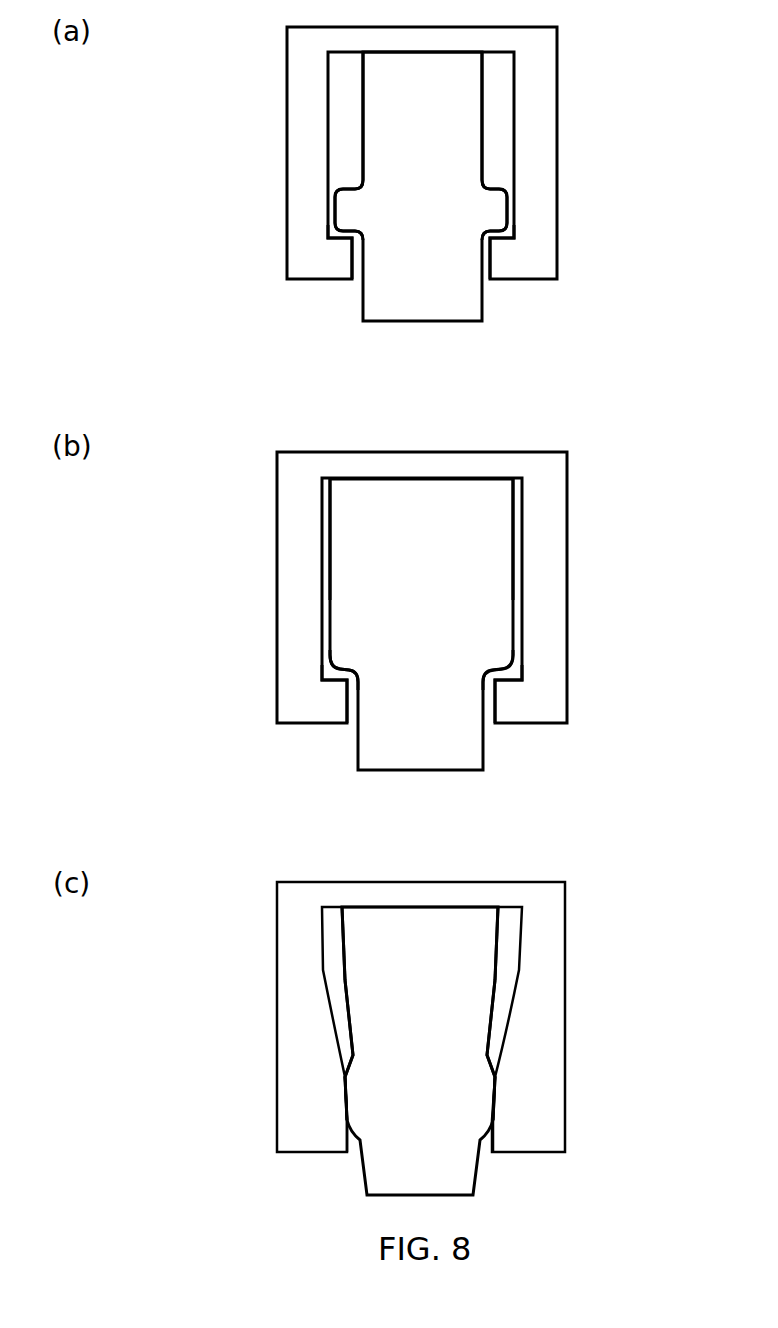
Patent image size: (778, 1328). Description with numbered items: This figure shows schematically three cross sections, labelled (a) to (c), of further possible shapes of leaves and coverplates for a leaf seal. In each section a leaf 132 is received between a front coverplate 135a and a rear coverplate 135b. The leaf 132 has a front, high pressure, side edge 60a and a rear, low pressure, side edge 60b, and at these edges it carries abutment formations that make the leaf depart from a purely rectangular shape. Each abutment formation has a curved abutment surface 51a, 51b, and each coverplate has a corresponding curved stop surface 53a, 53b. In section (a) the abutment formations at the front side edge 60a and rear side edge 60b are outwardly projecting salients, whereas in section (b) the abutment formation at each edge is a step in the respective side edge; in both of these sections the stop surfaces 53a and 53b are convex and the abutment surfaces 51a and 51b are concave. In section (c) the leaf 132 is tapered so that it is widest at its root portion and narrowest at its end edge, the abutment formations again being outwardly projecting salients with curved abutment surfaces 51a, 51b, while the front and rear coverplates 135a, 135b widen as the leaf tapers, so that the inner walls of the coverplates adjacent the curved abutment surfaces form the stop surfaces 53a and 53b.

The leaf 132 is at (445, 181).
The front coverplate 135a is at (303, 152).
The rear coverplate 135b is at (537, 152).
The front side edge 60a is at (362, 106).
The rear side edge 60b is at (482, 105).
The front abutment surface 51a is at (346, 220).
The rear abutment surface 51b is at (497, 222).
The front stop surface 53a is at (340, 240).
The rear stop surface 53b is at (502, 242).